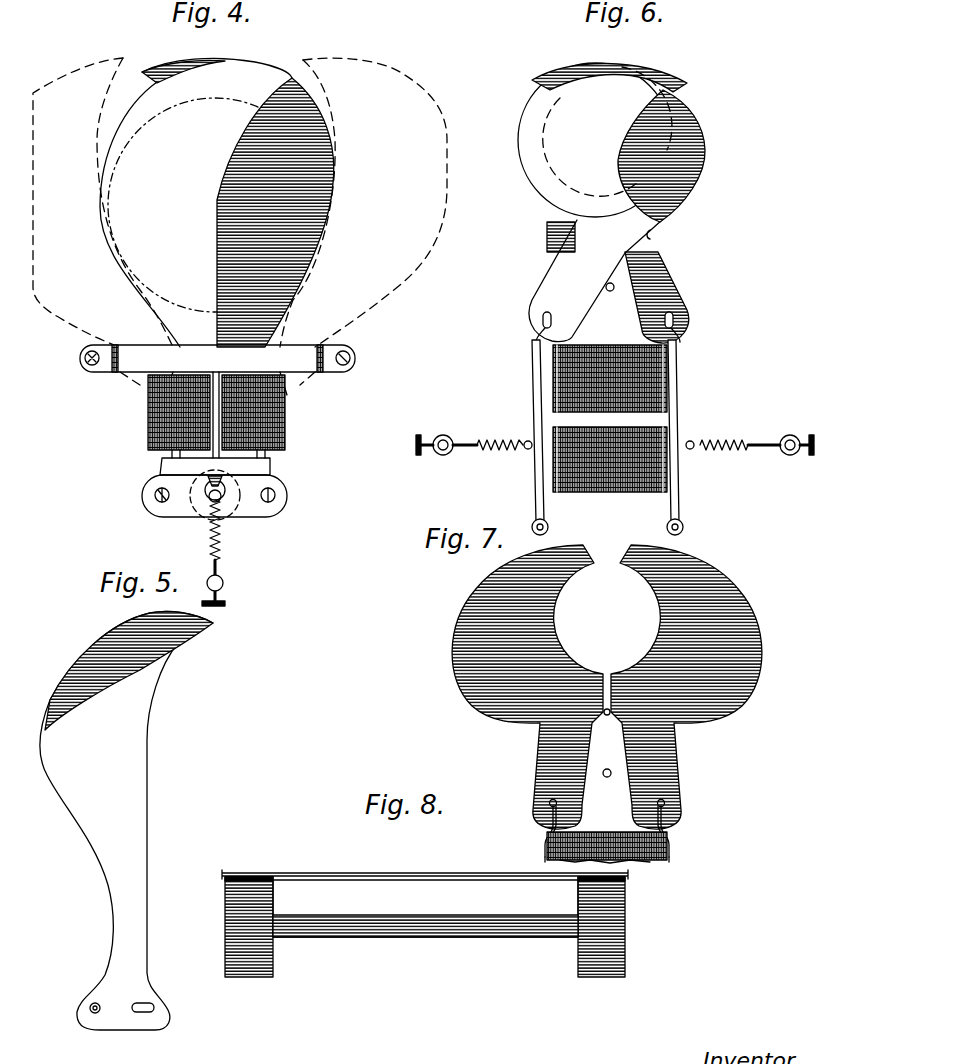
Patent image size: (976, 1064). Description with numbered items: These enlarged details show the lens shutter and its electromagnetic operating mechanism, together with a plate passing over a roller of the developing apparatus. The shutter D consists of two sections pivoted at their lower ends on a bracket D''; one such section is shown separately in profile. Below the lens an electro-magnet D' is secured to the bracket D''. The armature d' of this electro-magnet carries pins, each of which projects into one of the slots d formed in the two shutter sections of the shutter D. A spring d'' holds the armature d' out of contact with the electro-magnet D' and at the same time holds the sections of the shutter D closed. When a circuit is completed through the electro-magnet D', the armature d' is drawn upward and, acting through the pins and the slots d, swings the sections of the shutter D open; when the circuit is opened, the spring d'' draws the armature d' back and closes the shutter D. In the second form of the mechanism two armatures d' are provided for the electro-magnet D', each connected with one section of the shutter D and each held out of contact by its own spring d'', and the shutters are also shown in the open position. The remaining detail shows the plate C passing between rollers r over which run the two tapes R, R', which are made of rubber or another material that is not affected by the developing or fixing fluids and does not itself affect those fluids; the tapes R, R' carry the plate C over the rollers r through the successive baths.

In FIG. 4, the shutter D is at (240, 226).
In FIG. 5, the shutter D is at (126, 820).
In FIG. 6, the shutter D is at (613, 203).
In FIG. 7, the shutter D is at (602, 687).
In FIG. 4, the electro-magnet D' is at (240, 412).
In FIG. 6, the electro-magnet D' is at (642, 415).
In FIG. 7, the electro-magnet D' is at (627, 863).
In FIG. 4, the bracket D'' is at (238, 497).
In FIG. 5, the slot d is at (163, 1010).
In FIG. 6, the slot d is at (609, 320).
In FIG. 7, the slot d is at (617, 824).
In FIG. 4, the armature d' is at (243, 463).
In FIG. 6, the armature d' is at (618, 437).
In FIG. 7, the armature d' is at (635, 842).
In FIG. 4, the spring d'' is at (234, 553).
In FIG. 6, the spring d'' is at (615, 459).
In FIG. 8, the tape R is at (425, 908).
In FIG. 8, the tape R' is at (406, 876).
In FIG. 8, the roller r is at (273, 897).
In FIG. 8, the plate C is at (362, 873).